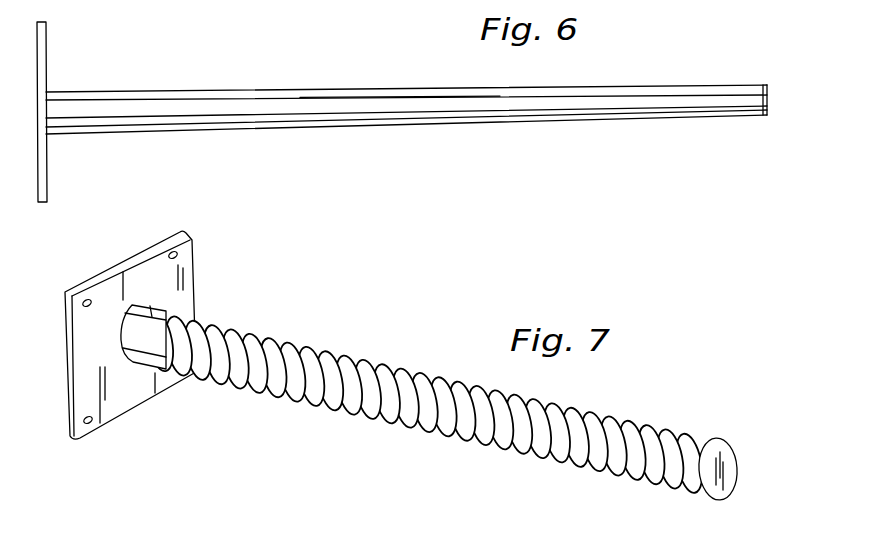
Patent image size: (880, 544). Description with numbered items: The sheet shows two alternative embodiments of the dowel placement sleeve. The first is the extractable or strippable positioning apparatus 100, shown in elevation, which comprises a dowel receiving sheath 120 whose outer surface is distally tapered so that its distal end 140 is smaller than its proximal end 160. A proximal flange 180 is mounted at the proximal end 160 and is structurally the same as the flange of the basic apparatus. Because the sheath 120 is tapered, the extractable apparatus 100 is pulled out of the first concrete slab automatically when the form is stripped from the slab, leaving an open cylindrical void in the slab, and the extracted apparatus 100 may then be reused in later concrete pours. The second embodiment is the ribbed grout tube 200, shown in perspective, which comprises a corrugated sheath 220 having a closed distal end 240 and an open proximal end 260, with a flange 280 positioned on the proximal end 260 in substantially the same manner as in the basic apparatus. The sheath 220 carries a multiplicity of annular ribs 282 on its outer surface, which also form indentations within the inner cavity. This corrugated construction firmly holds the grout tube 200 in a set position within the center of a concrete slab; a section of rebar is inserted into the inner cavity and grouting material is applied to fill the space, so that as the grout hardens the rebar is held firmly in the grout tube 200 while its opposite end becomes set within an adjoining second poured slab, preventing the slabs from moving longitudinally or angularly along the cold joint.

In FIG. 6, the extractable positioning apparatus 100 is at (421, 96).
In FIG. 6, the dowel receiving sheath 120 is at (437, 115).
In FIG. 6, the distal end 140 is at (742, 93).
In FIG. 6, the proximal end 160 is at (62, 125).
In FIG. 6, the proximal flange 180 is at (46, 47).
In FIG. 7, the grout tube 200 is at (459, 397).
In FIG. 7, the corrugated sheath 220 is at (424, 419).
In FIG. 7, the closed distal end 240 is at (723, 460).
In FIG. 7, the open proximal end 260 is at (167, 308).
In FIG. 7, the flange 280 is at (143, 268).
In FIG. 7, the annular ribs 282 is at (307, 403).